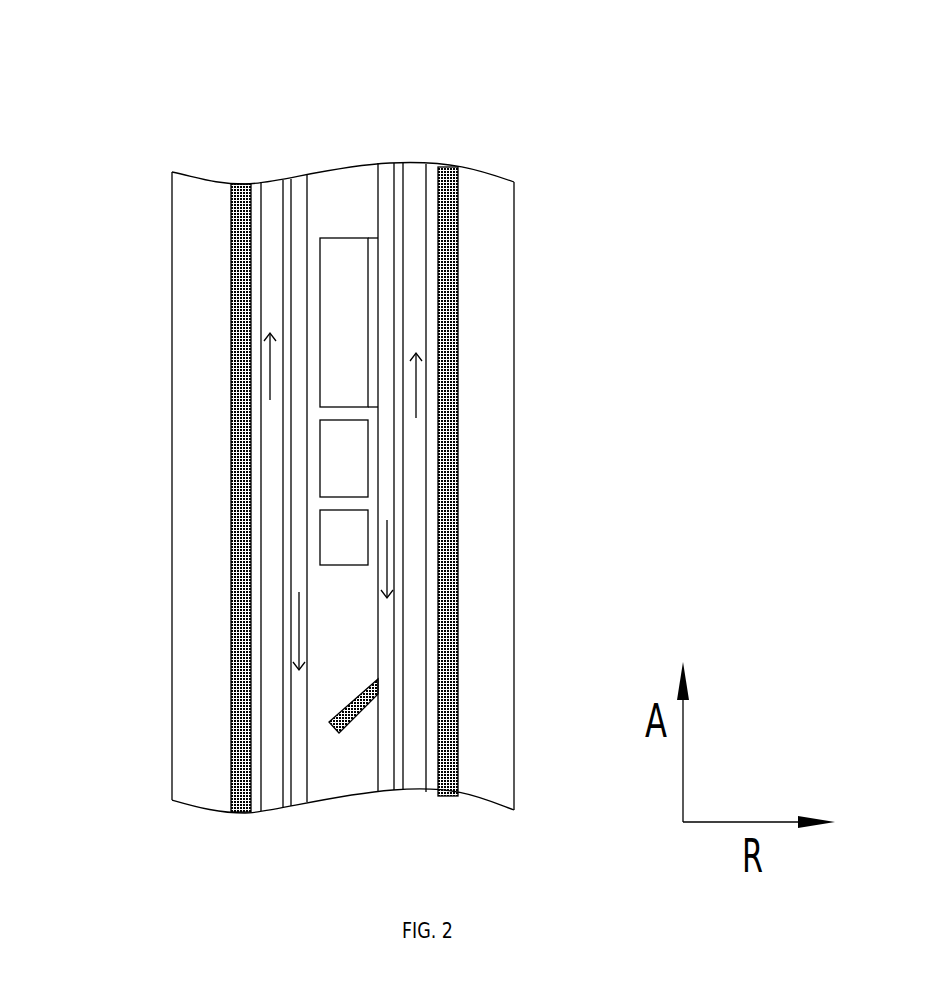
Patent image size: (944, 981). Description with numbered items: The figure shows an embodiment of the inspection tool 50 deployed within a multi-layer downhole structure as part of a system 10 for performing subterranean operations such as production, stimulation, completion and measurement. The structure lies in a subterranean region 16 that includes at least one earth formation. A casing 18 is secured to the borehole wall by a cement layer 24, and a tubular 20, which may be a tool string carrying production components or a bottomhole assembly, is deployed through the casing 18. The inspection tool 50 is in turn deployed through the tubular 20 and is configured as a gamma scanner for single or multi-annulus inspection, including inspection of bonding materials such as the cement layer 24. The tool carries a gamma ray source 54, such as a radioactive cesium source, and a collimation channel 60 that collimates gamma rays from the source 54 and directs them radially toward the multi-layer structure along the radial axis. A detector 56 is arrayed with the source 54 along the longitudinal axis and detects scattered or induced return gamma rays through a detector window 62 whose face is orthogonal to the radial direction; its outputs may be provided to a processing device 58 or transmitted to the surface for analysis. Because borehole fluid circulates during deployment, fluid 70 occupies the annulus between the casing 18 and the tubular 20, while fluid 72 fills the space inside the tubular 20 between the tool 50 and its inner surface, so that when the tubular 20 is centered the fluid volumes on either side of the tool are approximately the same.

The system 10 is at (156, 139).
The subterranean region 16 is at (480, 425).
The casing 18 is at (433, 508).
The tubular 20 is at (402, 635).
The cement layer 24 is at (443, 267).
The inspection tool 50 is at (352, 187).
The gamma ray source 54 is at (337, 532).
The detector 56 is at (340, 313).
The processing device 58 is at (337, 442).
The collimation channel 60 is at (362, 707).
The detector window 62 is at (373, 278).
The fluid 70 is at (270, 363).
The fluid 72 is at (297, 628).